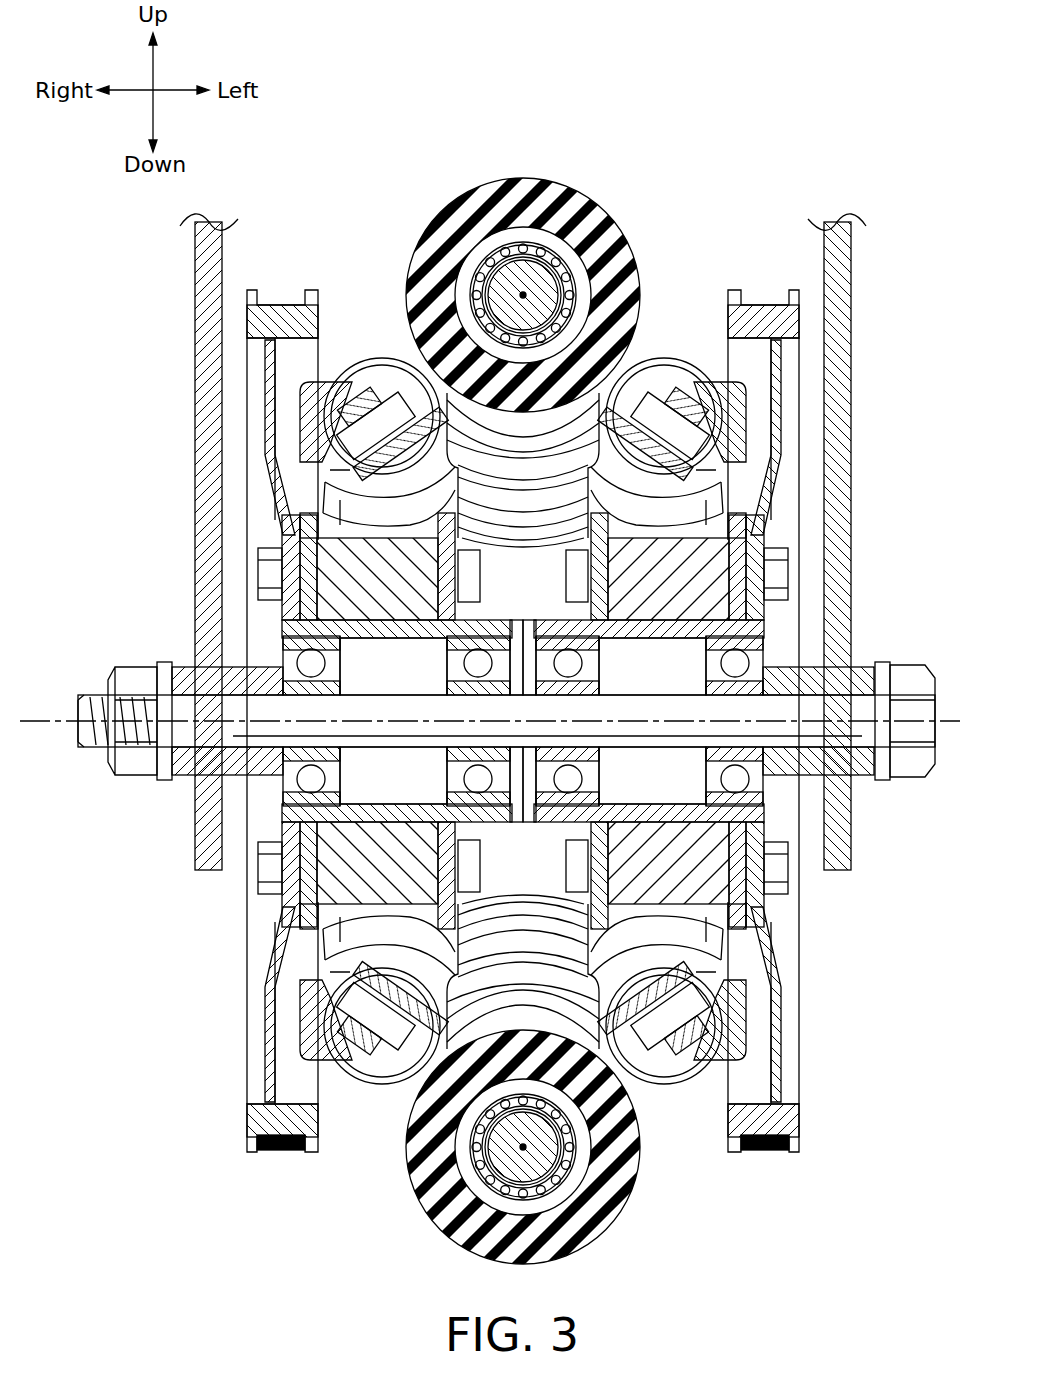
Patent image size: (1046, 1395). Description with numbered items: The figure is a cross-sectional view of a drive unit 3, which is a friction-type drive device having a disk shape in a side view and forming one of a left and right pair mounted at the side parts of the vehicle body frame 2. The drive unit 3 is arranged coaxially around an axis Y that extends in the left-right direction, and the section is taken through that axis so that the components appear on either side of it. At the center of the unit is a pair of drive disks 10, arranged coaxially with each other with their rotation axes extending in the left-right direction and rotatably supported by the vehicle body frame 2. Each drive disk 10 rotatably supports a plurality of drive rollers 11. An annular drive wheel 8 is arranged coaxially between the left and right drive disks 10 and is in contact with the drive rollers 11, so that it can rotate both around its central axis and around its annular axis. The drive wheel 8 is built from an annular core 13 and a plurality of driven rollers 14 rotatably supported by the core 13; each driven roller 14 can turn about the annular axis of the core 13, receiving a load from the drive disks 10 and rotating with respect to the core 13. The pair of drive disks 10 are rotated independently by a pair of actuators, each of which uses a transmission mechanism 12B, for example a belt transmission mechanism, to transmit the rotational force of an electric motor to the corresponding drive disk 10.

The vehicle body frame 2 is at (200, 318).
The drive unit 3 is at (368, 176).
The drive wheel 8 is at (484, 684).
The drive disk 10 is at (340, 362).
The drive roller 11 is at (652, 380).
The transmission mechanism 12B is at (243, 1168).
The core 13 is at (532, 280).
The driven roller 14 is at (438, 244).
The axis Y is at (947, 720).